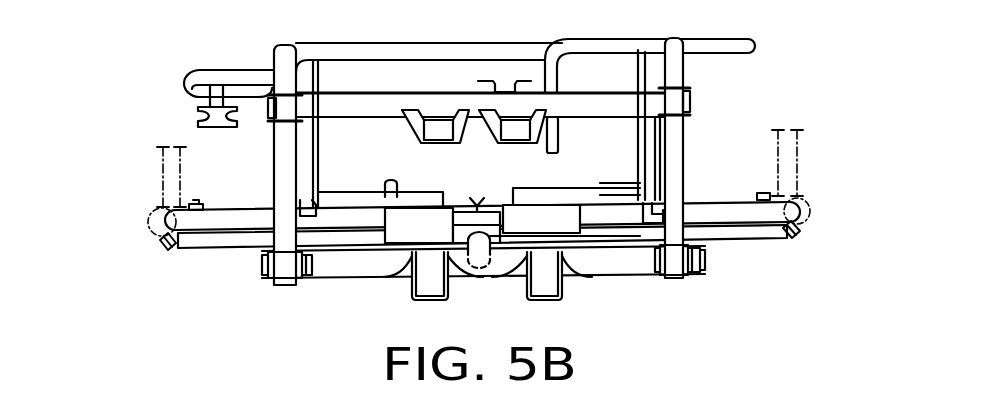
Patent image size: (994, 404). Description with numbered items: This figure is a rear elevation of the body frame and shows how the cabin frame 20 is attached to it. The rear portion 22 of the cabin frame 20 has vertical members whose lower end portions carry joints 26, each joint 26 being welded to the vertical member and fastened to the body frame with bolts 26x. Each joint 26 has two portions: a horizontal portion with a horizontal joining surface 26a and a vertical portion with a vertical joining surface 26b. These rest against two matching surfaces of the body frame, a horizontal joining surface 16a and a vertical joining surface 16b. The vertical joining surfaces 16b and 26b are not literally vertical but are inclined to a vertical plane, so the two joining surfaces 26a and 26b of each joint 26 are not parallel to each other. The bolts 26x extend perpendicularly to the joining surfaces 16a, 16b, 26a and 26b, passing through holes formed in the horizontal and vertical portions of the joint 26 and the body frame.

The horizontal joining surface 16a is at (482, 188).
The vertical joining surface 16b is at (448, 264).
The cabin frame 20 is at (495, 149).
The rear portion 22 is at (163, 155).
The joint 26 is at (160, 208).
The horizontal joining surface 26a is at (205, 210).
The vertical joining surface 26b is at (178, 250).
The bolt 26x is at (196, 200).